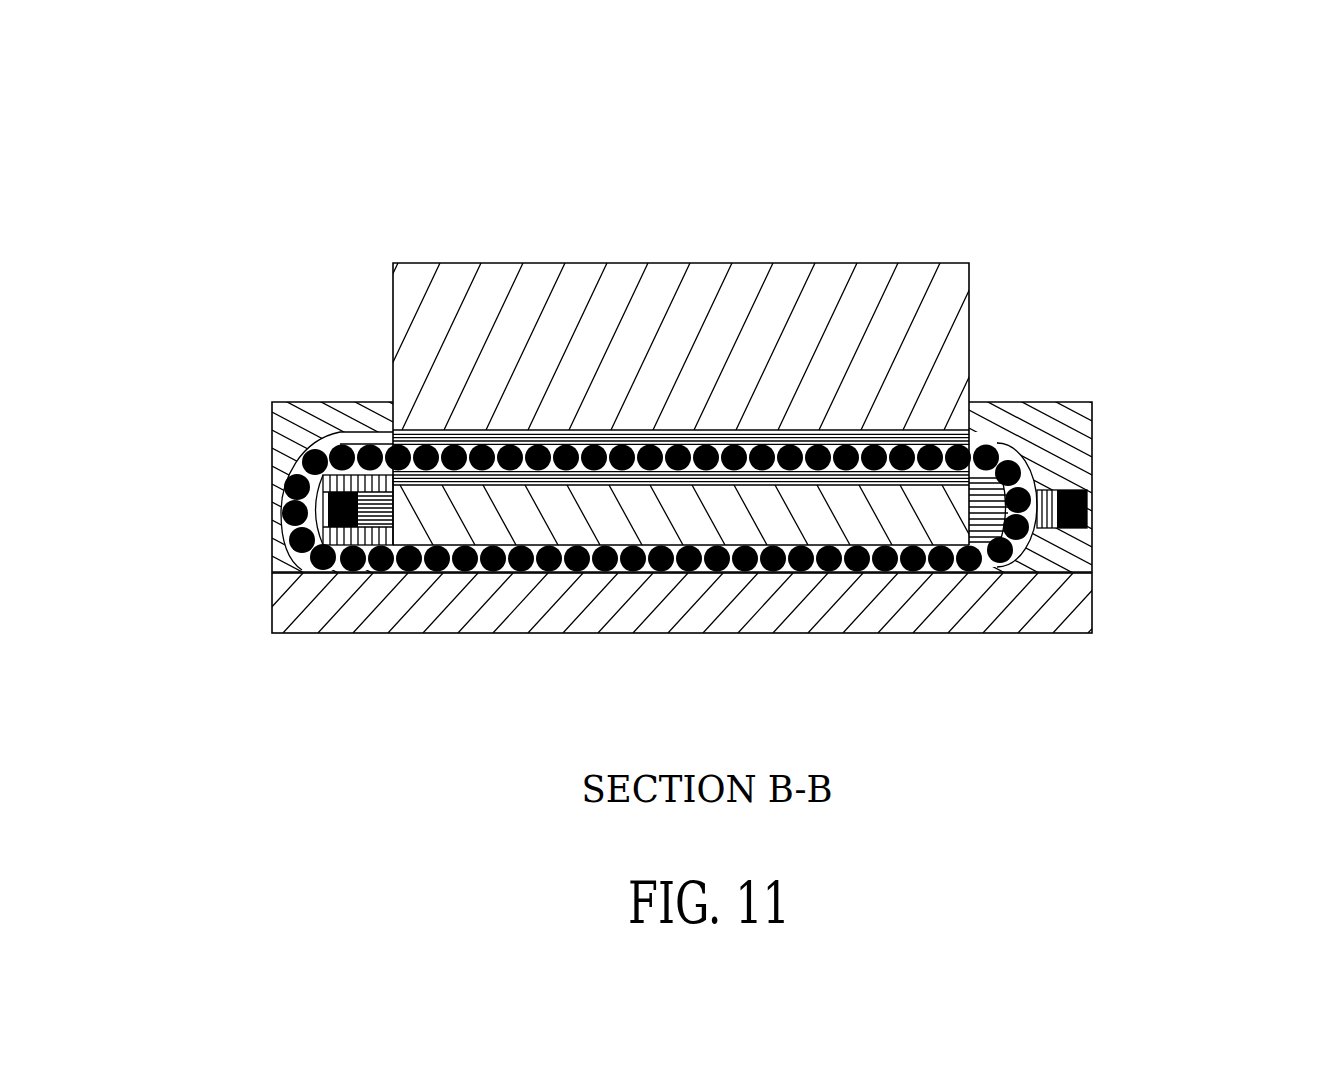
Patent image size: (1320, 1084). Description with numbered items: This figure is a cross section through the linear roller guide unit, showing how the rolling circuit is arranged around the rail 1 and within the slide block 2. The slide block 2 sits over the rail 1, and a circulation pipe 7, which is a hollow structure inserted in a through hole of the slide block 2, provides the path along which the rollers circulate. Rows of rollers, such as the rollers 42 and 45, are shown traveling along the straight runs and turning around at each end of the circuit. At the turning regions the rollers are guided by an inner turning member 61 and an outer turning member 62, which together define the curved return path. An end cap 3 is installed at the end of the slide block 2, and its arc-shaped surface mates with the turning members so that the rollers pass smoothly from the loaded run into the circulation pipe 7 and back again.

The rail 1 is at (1072, 610).
The slide block 2 is at (655, 300).
The end cap 3 is at (313, 423).
The circulation pipe 7 is at (880, 432).
The roller 42 is at (282, 497).
The roller 45 is at (990, 448).
The inner turning member 61 is at (372, 515).
The outer turning member 62 is at (1043, 515).